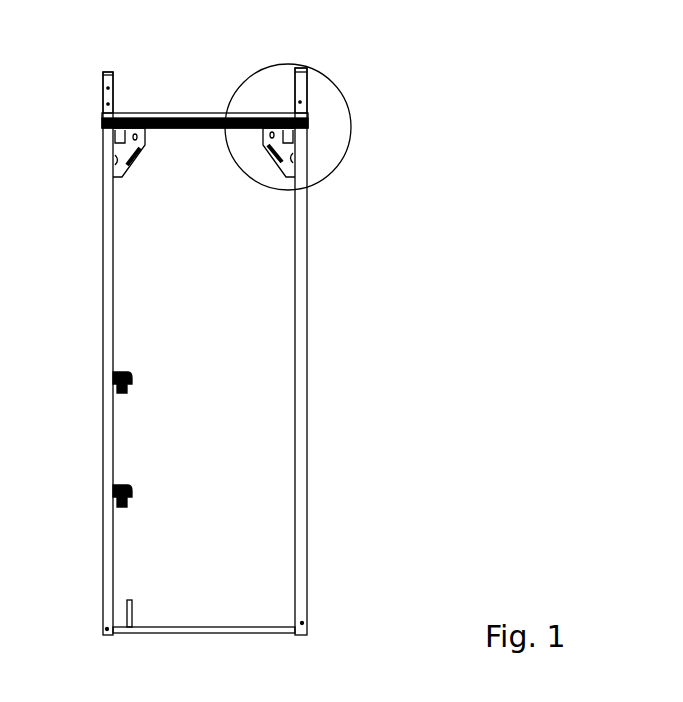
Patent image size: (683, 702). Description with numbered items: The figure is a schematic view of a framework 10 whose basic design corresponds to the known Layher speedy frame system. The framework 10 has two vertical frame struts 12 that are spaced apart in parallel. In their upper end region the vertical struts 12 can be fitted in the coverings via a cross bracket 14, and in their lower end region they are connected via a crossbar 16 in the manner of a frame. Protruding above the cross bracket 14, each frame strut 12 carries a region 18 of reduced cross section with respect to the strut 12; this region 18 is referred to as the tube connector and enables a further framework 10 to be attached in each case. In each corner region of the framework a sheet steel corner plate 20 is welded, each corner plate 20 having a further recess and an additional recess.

The framework 10 is at (497, 157).
The vertical frame strut 12 is at (107, 335).
The cross bracket 14 is at (208, 115).
The crossbar 16 is at (205, 628).
The region with reduced cross section (tube connector) 18 is at (105, 83).
The sheet steel corner plate 20 is at (122, 168).